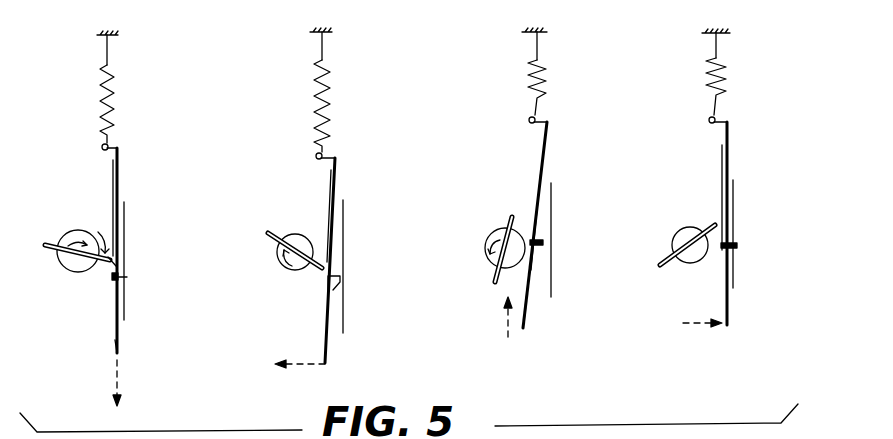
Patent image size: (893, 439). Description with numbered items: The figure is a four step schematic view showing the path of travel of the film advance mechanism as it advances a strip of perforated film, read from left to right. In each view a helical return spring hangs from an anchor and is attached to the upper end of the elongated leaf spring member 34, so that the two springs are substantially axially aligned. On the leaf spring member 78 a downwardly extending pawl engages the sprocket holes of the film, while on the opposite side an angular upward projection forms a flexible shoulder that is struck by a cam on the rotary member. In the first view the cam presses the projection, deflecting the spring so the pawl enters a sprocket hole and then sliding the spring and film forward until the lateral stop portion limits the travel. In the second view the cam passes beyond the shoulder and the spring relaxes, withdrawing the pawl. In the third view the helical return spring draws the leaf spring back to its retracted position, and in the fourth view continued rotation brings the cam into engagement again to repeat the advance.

The leaf spring member 34 is at (113, 178).
The leaf spring member 78 is at (114, 345).